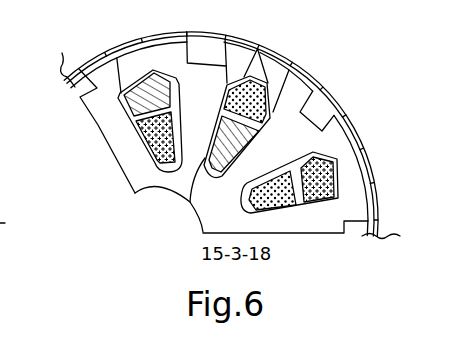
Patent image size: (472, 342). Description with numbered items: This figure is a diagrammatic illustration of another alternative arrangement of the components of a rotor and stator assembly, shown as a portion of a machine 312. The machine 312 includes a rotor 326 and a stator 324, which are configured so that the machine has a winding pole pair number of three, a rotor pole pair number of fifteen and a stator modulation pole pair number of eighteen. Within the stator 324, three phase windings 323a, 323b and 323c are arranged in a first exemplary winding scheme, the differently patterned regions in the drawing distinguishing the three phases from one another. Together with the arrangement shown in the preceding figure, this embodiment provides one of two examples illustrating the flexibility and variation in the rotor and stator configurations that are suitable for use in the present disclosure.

The machine 312 is at (292, 50).
The rotor 326 is at (375, 179).
The stator 324 is at (331, 234).
The phase winding 323a is at (122, 100).
The phase winding 323b is at (146, 141).
The phase winding 323c is at (278, 171).